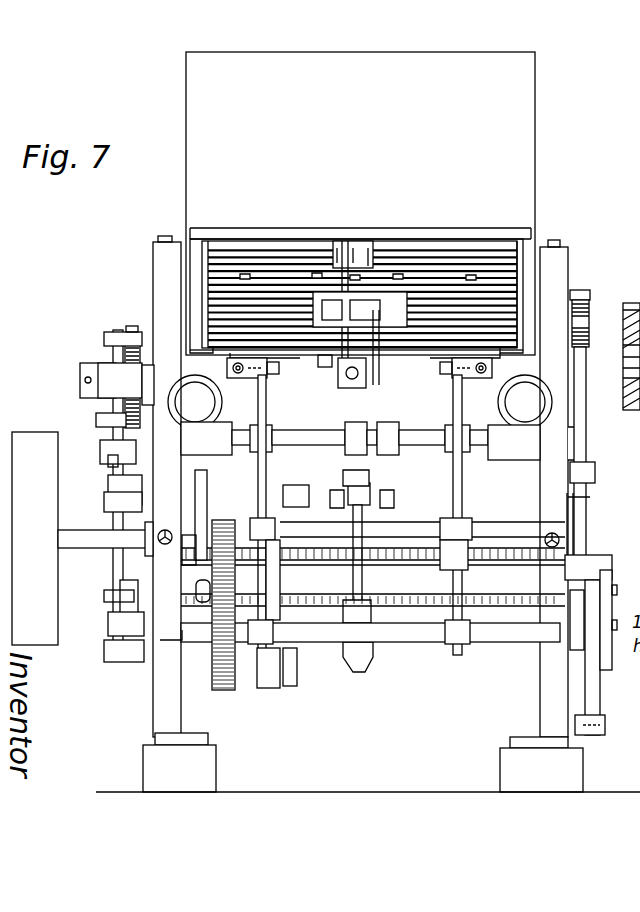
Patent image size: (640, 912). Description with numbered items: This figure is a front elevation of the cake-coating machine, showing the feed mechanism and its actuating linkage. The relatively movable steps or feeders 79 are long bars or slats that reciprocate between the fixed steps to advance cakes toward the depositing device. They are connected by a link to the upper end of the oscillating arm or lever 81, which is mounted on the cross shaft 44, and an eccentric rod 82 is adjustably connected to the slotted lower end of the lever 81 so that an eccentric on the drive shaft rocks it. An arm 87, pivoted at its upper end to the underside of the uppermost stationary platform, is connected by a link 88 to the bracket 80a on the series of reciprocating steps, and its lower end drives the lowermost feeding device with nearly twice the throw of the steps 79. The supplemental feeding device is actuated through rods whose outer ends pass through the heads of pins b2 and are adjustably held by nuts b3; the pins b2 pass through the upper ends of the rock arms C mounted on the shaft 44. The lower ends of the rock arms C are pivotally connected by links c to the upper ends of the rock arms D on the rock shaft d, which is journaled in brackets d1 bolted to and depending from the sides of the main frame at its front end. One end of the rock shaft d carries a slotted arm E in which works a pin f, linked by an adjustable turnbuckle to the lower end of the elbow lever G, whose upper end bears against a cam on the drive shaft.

The arm 87 is at (353, 310).
The bracket 80a is at (373, 318).
The nut b3 is at (337, 320).
The link 88 is at (352, 350).
The pin b2 is at (438, 370).
The oscillating arm or lever 81 is at (377, 417).
The rock arm C is at (268, 483).
The cross shaft 44 is at (337, 475).
The link c is at (440, 547).
The rock arm D is at (263, 588).
The eccentric rod 82 is at (363, 568).
The rock shaft d is at (431, 642).
The bracket d1 is at (172, 638).
The arm E is at (585, 708).
The elbow lever G is at (603, 563).
The pin f is at (603, 723).
The movable steps or feeders 79 is at (639, 745).